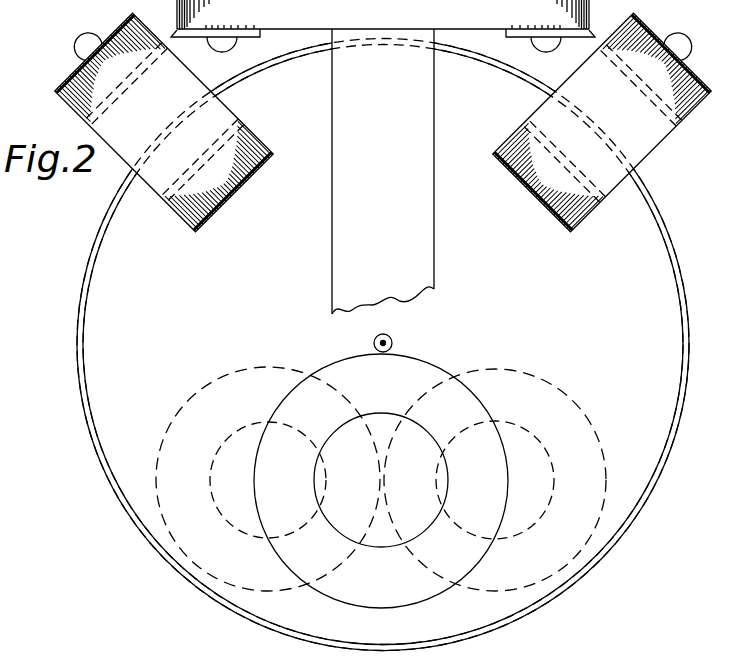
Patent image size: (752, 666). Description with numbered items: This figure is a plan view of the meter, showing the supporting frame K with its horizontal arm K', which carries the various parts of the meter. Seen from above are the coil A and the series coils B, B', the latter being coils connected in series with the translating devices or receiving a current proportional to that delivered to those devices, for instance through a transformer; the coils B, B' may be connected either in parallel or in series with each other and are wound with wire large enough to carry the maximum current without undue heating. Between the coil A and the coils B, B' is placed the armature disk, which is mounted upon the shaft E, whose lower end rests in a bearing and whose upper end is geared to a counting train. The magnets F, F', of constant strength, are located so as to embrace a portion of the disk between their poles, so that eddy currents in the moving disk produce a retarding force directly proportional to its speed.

The supporting frame K is at (383, 26).
The horizontal arm K' is at (383, 171).
The magnet F is at (157, 116).
The magnet F' is at (610, 116).
The shaft E is at (373, 343).
The coil A is at (411, 372).
The series coil B is at (260, 479).
The series coil B' is at (509, 480).